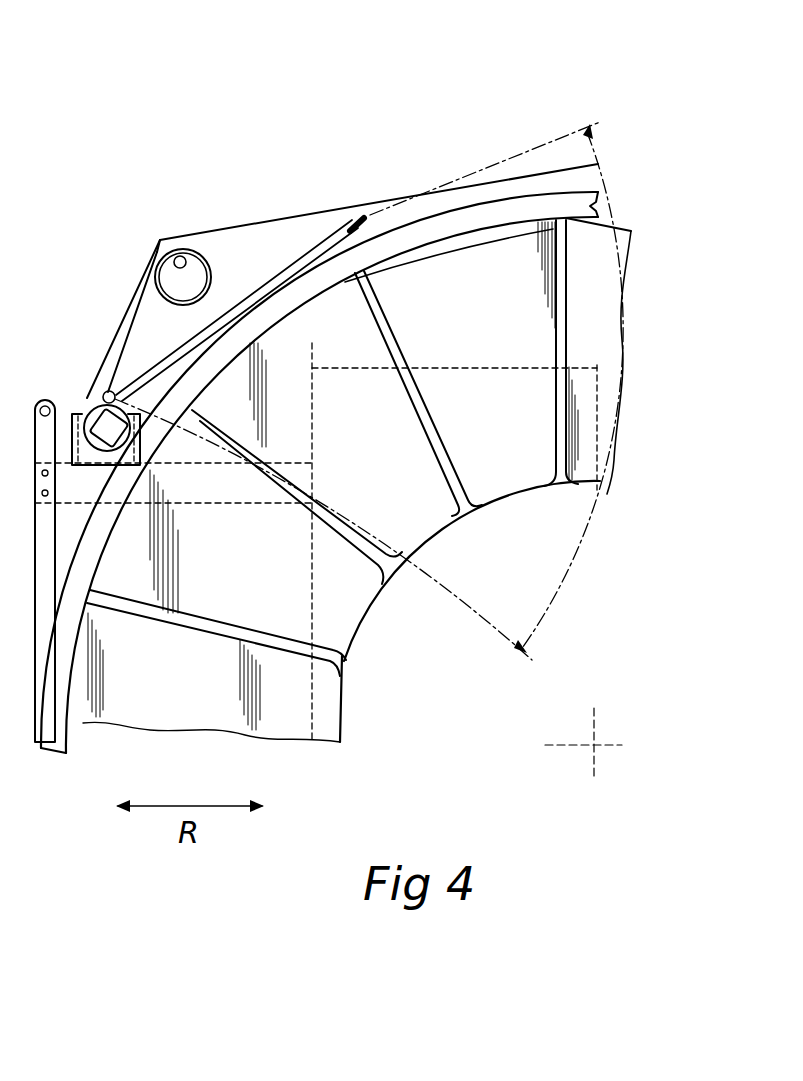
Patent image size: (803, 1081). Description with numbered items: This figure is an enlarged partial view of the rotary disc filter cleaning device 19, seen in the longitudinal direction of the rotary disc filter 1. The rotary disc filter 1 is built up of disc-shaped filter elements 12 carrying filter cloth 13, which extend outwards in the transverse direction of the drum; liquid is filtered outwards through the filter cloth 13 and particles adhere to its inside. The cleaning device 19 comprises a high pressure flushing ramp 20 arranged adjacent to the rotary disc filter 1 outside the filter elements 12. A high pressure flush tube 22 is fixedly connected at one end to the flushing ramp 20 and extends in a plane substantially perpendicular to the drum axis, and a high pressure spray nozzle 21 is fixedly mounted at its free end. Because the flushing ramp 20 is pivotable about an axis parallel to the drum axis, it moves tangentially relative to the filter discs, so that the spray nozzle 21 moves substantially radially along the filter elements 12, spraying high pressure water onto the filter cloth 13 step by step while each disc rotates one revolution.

The rotary disc filter 1 is at (478, 138).
The disc-shaped filter element 12 is at (440, 272).
The filter cloth 13 is at (332, 485).
The rotary disc filter cleaning device 19 is at (110, 180).
The high pressure flushing ramp 20 is at (77, 370).
The high pressure spray nozzle 21 is at (320, 195).
The high pressure flush tube 22 is at (267, 280).